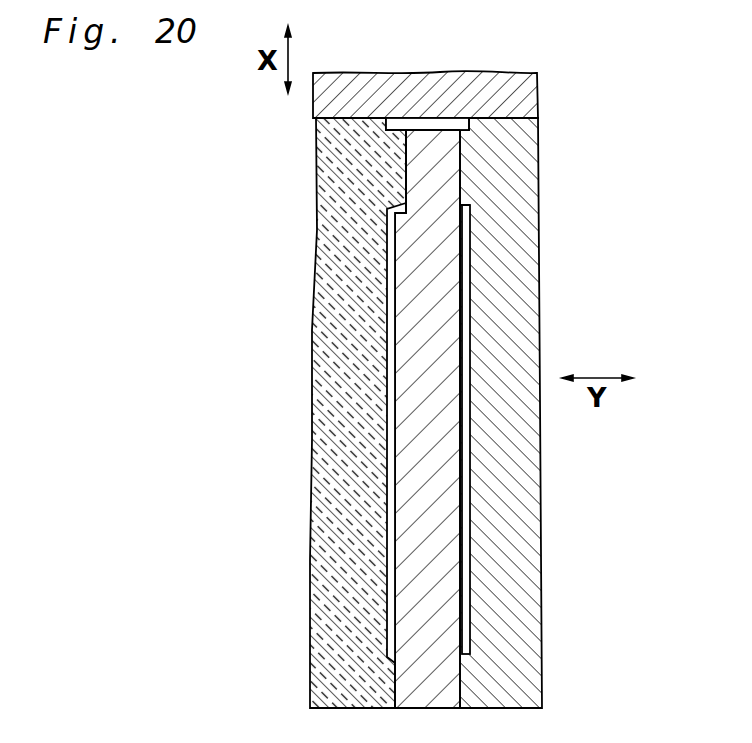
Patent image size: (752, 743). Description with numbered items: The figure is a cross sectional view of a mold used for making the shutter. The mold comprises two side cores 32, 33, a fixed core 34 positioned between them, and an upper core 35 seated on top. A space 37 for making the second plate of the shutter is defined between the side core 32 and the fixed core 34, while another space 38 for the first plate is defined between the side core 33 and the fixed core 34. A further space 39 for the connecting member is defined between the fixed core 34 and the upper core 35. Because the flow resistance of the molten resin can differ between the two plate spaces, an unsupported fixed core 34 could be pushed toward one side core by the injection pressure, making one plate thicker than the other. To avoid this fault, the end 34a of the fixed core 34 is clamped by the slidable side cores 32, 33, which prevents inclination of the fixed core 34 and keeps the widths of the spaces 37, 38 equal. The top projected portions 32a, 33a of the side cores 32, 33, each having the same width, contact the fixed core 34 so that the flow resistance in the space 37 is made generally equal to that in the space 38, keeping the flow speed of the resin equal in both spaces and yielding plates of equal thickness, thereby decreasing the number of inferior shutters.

The side core 32 is at (503, 248).
The top projected portion of side core 32a is at (463, 158).
The side core 33 is at (337, 230).
The top projected portion of side core 33a is at (397, 156).
The fixed core 34 is at (408, 367).
The free end of fixed core 34a is at (443, 168).
The upper core 35 is at (505, 90).
The space 37 is at (465, 310).
The space 38 is at (390, 299).
The space 39 is at (427, 125).